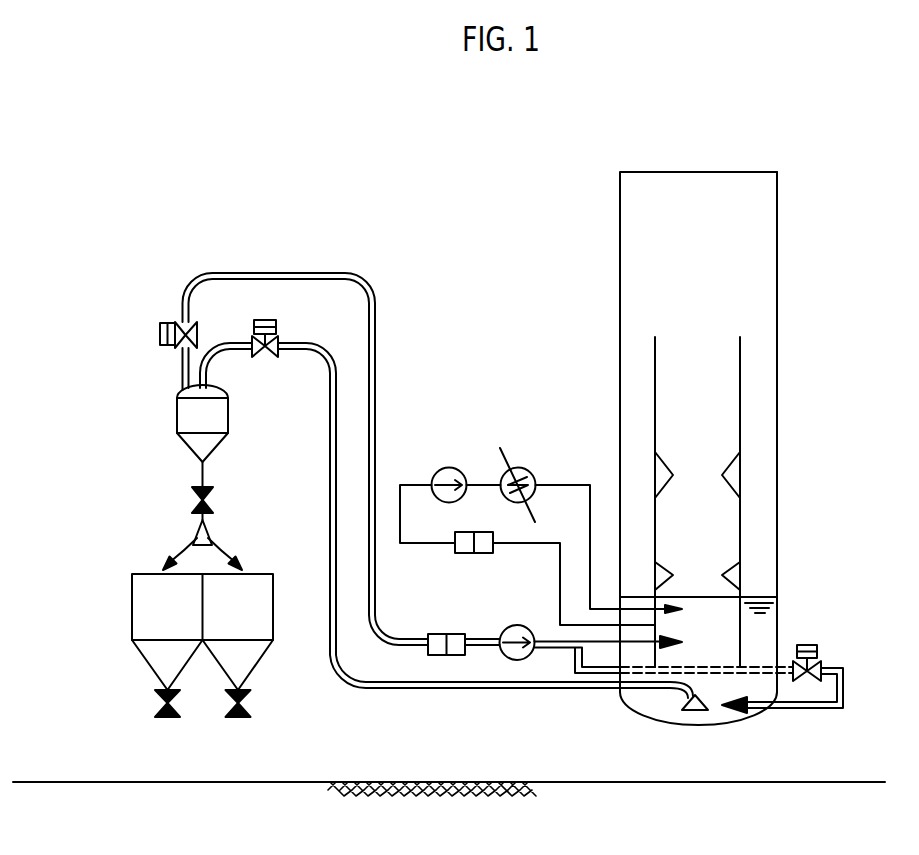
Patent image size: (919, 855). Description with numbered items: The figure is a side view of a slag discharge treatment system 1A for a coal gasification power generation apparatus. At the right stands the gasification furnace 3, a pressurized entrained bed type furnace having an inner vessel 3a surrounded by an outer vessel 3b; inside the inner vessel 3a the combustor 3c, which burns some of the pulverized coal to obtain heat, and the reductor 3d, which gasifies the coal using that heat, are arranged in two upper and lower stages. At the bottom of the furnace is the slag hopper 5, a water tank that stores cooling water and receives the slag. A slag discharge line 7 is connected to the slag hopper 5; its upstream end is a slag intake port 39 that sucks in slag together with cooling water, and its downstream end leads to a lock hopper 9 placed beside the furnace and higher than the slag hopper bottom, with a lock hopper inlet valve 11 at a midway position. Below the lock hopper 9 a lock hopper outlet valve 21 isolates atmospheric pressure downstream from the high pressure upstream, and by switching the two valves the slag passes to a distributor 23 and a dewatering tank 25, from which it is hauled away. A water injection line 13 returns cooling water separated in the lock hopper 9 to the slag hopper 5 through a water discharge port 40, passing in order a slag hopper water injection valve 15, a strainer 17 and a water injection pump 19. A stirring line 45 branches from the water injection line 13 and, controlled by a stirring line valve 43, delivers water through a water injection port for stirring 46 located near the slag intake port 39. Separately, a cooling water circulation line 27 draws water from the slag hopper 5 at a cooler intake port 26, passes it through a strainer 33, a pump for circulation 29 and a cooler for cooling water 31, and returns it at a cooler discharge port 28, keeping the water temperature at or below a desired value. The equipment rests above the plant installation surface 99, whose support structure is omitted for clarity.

The slag discharge treatment system 1A is at (303, 228).
The gasification furnace 3 is at (842, 278).
The inner vessel 3a is at (740, 392).
The outer vessel 3b is at (777, 444).
The combustor 3c is at (708, 547).
The reductor 3d is at (710, 423).
The slag hopper 5 is at (778, 611).
The slag discharge line 7 is at (470, 688).
The lock hopper 9 is at (177, 410).
The lock hopper inlet valve 11 is at (278, 326).
The water injection line 13 is at (366, 275).
The slag hopper water injection valve 15 is at (160, 332).
The strainer 17 is at (437, 634).
The water injection pump 19 is at (518, 625).
The lock hopper outlet valve 21 is at (192, 493).
The distributor 23 is at (210, 530).
The dewatering tank 25 is at (132, 605).
The cooler intake port 26 is at (684, 622).
The cooling water circulation line 27 is at (574, 485).
The cooler discharge port 28 is at (680, 606).
The pump for circulation 29 is at (449, 467).
The cooler for cooling water 31 is at (518, 467).
The strainer 33 is at (484, 553).
The slag intake port 39 is at (693, 712).
The water discharge port 40 is at (683, 649).
The stirring line valve 43 is at (822, 650).
The stirring line 45 is at (843, 687).
The water injection port for stirring 46 is at (735, 712).
The installation surface 99 is at (800, 781).